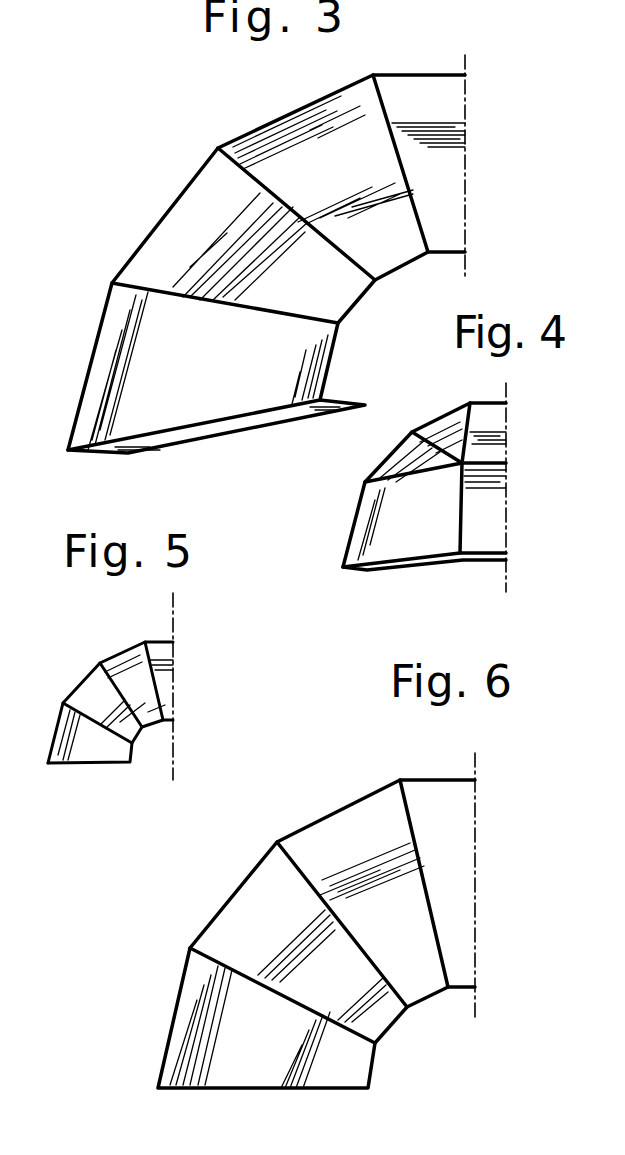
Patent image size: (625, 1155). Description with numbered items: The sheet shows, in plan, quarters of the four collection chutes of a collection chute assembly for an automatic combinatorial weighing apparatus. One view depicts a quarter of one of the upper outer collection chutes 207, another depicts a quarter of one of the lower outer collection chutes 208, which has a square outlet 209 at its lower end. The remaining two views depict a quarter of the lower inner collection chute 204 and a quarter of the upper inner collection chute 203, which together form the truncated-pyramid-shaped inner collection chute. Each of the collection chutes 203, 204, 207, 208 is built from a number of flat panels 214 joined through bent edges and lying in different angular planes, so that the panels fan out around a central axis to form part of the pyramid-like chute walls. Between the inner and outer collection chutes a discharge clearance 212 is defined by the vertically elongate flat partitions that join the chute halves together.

In FIG. 6, the upper inner collection chute 203 is at (457, 733).
In FIG. 5, the lower inner collection chute 204 is at (95, 650).
In FIG. 3, the upper outer collection chute 207 is at (117, 228).
In FIG. 4, the lower outer collection chute 208 is at (352, 504).
In FIG. 4, the square outlet 209 is at (483, 517).
In FIG. 5, the discharge clearance 212 is at (143, 750).
In FIG. 3, the flat panel 214 is at (307, 357).
In FIG. 4, the flat panel 214 is at (385, 547).
In FIG. 5, the flat panel 214 is at (142, 680).
In FIG. 6, the flat panel 214 is at (340, 827).